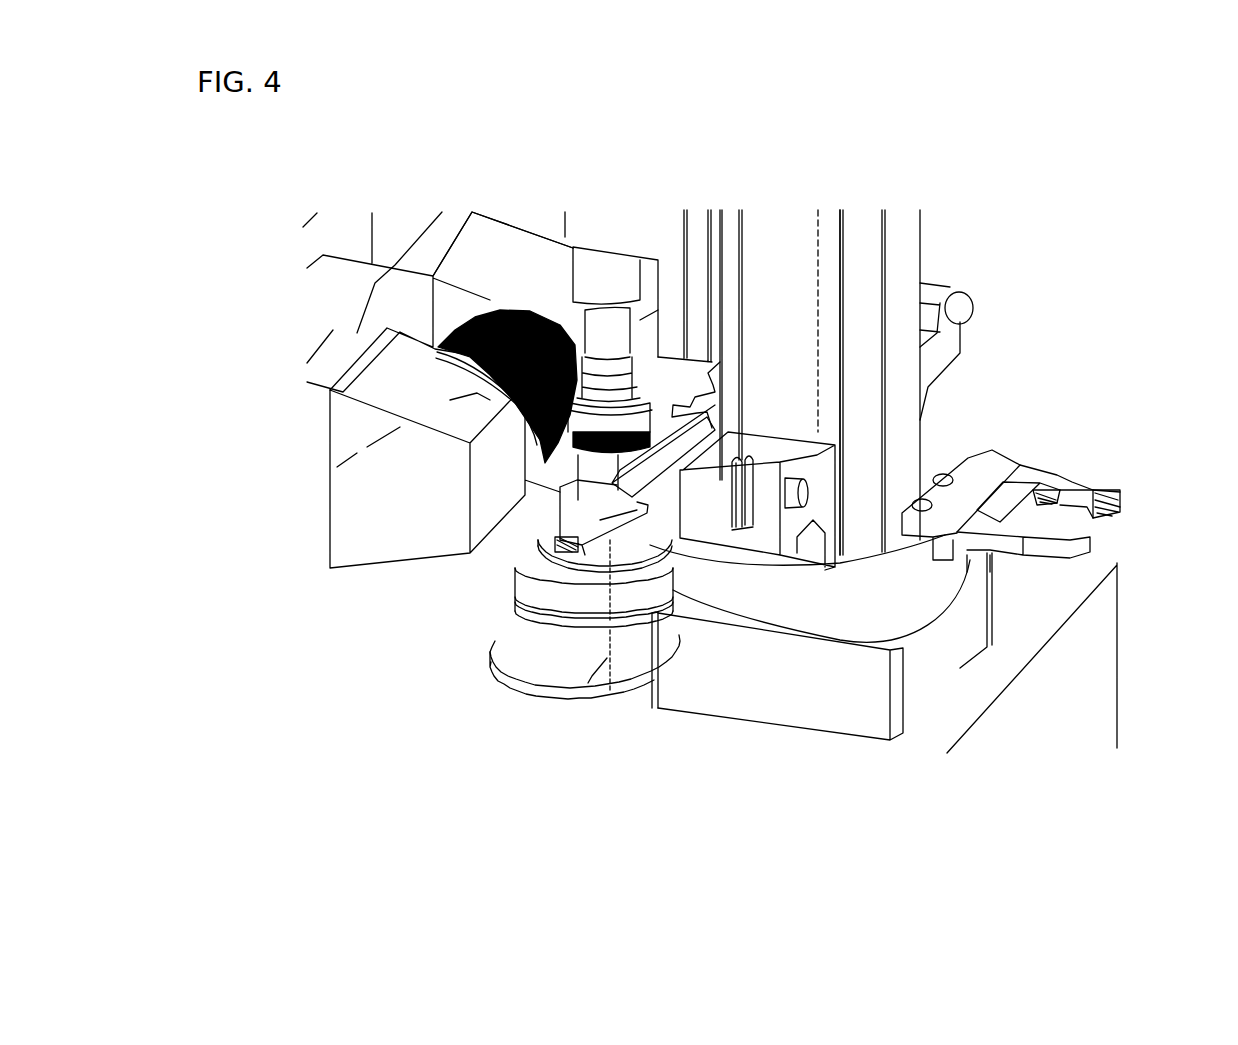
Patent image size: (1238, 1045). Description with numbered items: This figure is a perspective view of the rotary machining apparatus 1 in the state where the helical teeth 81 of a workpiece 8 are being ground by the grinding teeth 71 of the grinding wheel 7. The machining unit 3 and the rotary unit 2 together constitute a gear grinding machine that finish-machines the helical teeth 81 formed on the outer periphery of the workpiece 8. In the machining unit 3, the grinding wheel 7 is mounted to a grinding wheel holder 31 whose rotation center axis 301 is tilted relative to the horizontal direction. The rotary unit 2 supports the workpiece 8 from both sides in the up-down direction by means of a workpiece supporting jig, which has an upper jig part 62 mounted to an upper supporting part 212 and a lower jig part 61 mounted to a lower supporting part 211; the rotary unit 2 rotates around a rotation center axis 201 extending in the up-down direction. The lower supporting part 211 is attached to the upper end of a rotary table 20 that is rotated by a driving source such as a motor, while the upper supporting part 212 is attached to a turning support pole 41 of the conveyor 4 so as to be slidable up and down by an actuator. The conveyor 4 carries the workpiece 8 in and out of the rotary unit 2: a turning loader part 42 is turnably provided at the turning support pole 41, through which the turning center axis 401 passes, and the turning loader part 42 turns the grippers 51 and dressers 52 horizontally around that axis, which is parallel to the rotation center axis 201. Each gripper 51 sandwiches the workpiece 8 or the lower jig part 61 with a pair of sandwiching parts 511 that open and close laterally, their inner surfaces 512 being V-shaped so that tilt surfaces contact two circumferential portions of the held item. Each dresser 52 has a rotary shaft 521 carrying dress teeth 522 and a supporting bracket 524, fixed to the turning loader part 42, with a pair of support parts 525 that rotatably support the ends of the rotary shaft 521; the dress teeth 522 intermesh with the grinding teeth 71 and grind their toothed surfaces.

The rotary machining apparatus 1 is at (1025, 330).
The rotary unit 2 is at (505, 682).
The machining unit 3 is at (318, 298).
The conveyor 4 is at (930, 247).
The grinding wheel 7 is at (470, 400).
The workpiece 8 is at (573, 450).
The rotary table 20 is at (560, 660).
The grinding wheel holder 31 is at (483, 273).
The turning support pole 41 is at (857, 243).
The turning loader part 42 is at (832, 607).
The gripper 51 is at (1068, 473).
The dresser 52 is at (843, 480).
The lower jig part 61 is at (540, 500).
The upper jig part 62 is at (600, 400).
The grinding teeth 71 is at (482, 371).
The helical teeth 81 is at (547, 522).
The rotation center axis 201 is at (588, 683).
The lower supporting part 211 is at (560, 482).
The upper supporting part 212 is at (607, 277).
The rotation center axis 301 is at (330, 467).
The turning center axis 401 is at (812, 222).
The sandwiching parts 511 is at (1118, 493).
The inner surfaces 512 is at (1087, 510).
The rotary shaft 521 is at (773, 477).
The dress teeth 522 is at (722, 560).
The supporting bracket 524 is at (823, 497).
The support parts 525 is at (697, 527).